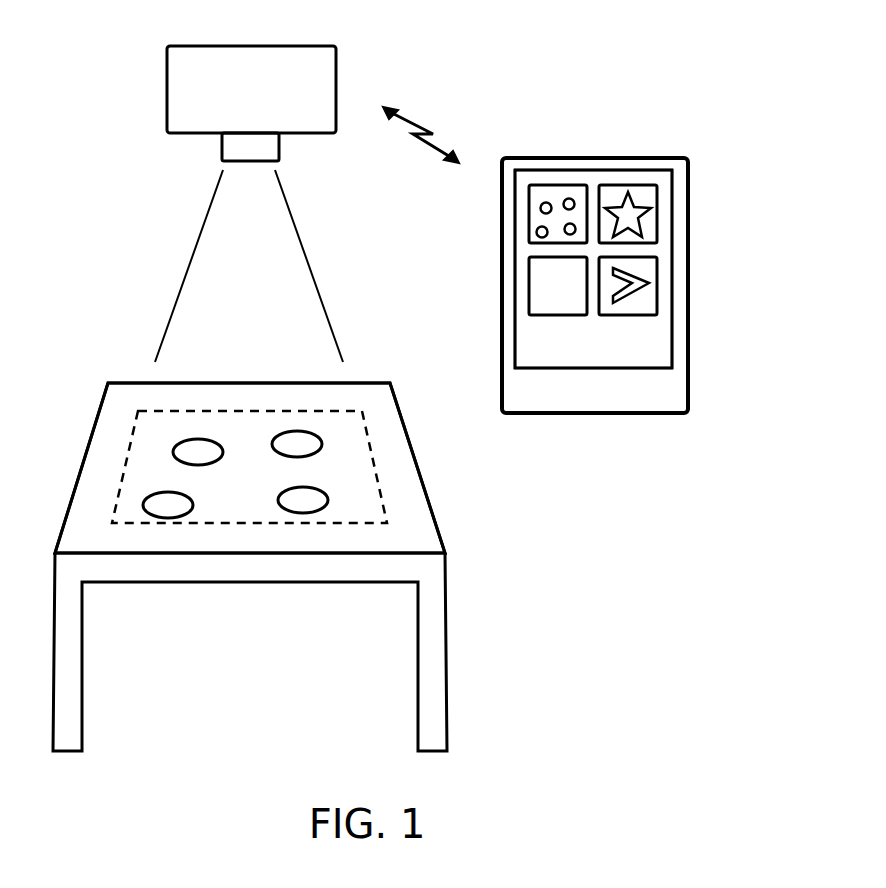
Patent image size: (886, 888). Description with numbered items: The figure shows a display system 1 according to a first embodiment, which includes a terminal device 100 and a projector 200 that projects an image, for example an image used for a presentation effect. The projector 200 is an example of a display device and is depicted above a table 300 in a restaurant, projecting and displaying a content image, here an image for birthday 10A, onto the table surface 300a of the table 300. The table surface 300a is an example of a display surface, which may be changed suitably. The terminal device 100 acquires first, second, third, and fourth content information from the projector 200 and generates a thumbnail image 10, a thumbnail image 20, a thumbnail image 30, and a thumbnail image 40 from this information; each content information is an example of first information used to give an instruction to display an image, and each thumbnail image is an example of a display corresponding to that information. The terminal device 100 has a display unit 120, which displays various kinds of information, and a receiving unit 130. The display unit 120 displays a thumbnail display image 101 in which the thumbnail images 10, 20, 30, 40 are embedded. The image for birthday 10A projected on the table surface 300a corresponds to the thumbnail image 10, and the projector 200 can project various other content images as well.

The display system 1 is at (516, 46).
The thumbnail image 10 is at (537, 218).
The image for birthday 10A is at (357, 458).
The thumbnail image 20 is at (648, 218).
The thumbnail image 30 is at (538, 283).
The thumbnail image 40 is at (648, 283).
The terminal device 100 is at (630, 157).
The thumbnail display image 101 is at (563, 181).
The display unit 120 is at (668, 323).
The receiving unit 130 is at (655, 358).
The projector 200 is at (254, 184).
The table 300 is at (106, 389).
The table surface 300a is at (370, 393).